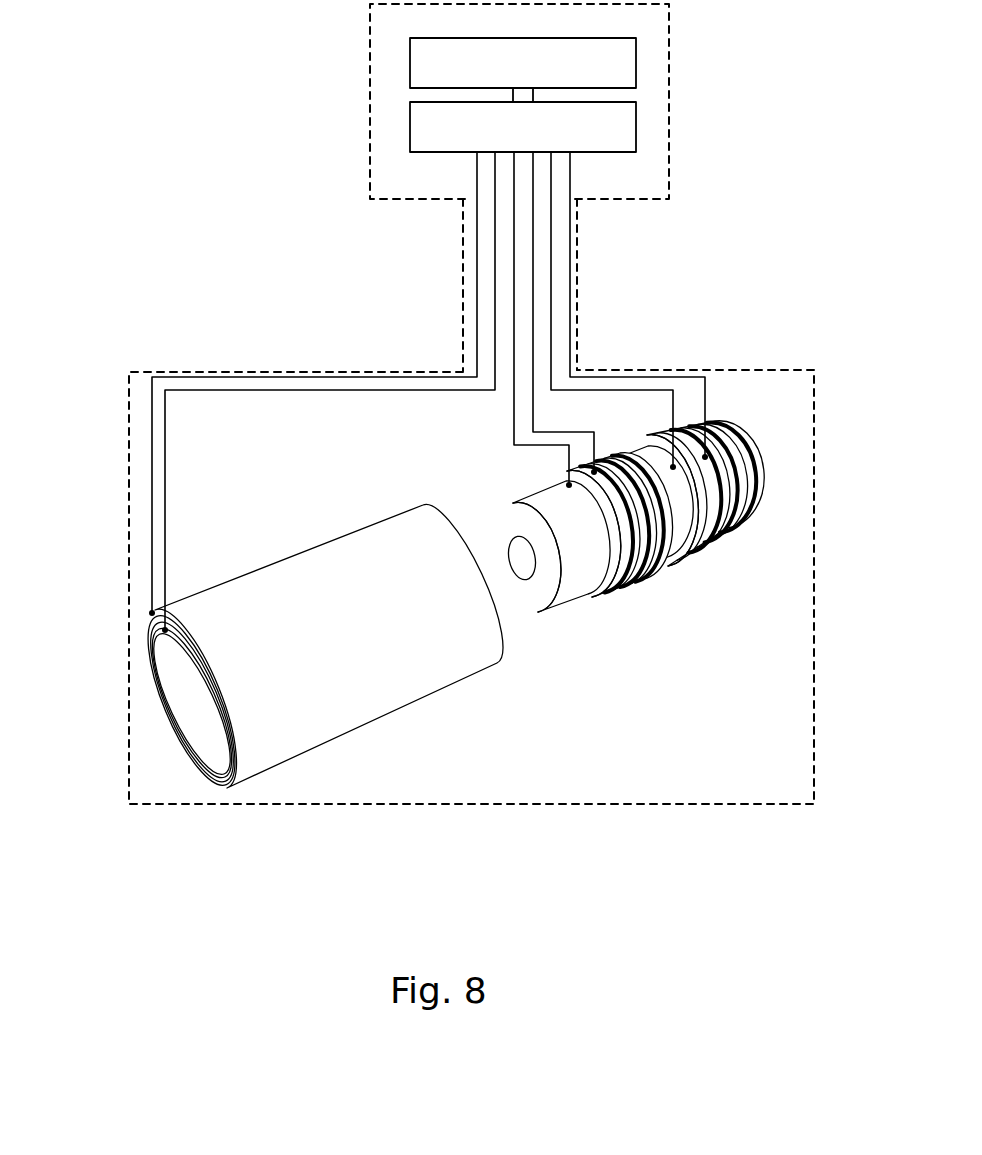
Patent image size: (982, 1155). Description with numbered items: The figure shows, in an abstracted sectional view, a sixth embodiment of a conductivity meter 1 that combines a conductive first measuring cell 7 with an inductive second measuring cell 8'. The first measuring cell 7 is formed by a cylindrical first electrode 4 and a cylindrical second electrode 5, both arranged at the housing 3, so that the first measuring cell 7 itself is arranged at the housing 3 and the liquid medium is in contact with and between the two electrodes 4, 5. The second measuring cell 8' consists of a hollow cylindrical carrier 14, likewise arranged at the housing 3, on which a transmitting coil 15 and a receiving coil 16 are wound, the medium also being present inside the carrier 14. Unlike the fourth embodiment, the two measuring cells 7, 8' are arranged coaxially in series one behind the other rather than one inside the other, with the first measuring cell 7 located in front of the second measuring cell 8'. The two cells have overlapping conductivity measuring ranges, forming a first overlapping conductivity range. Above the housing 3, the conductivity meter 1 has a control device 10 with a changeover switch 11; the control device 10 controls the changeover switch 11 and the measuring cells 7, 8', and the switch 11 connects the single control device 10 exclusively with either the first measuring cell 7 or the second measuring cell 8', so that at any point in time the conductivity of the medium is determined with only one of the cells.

The conductivity meter 1 is at (735, 233).
The housing 3 is at (789, 778).
The first electrode 4 is at (145, 623).
The second electrode 5 is at (146, 635).
The first measuring cell 7 is at (222, 785).
The second measuring cell 8' is at (678, 515).
The control device 10 is at (463, 75).
The changeover switch 11 is at (463, 137).
The hollow cylindrical carrier 14 is at (748, 485).
The transmitting coil 15 is at (622, 605).
The receiving coil 16 is at (705, 563).